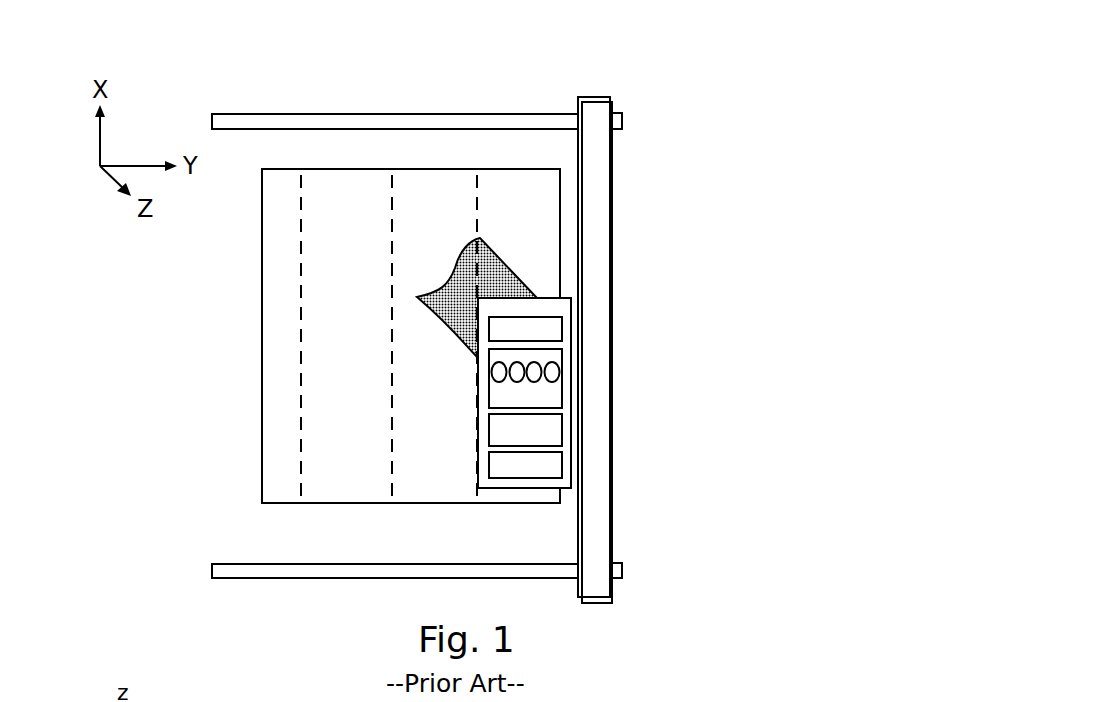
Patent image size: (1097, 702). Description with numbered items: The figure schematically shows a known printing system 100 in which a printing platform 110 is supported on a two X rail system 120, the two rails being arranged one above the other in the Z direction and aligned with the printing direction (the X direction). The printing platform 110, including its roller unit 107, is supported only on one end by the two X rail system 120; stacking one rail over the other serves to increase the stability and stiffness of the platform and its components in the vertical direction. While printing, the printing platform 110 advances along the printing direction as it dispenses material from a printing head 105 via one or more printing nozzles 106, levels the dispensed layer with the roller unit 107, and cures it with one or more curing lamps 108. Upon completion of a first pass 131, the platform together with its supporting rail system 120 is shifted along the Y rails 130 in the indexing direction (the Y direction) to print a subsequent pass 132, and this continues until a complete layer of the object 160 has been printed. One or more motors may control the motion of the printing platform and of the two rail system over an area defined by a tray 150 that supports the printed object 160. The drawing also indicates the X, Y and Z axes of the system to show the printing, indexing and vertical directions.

The printing system 100 is at (718, 118).
The printing head 105 is at (558, 390).
The printing nozzles 106 is at (555, 368).
The roller unit 107 is at (557, 430).
The curing lamps 108 is at (555, 328).
The printing platform 110 is at (562, 305).
The two X rail system 120 is at (603, 116).
The Y rails 130 is at (382, 116).
The first pass 131 is at (560, 183).
The subsequent pass 132 is at (442, 195).
The tray 150 is at (323, 366).
The object 160 is at (417, 297).